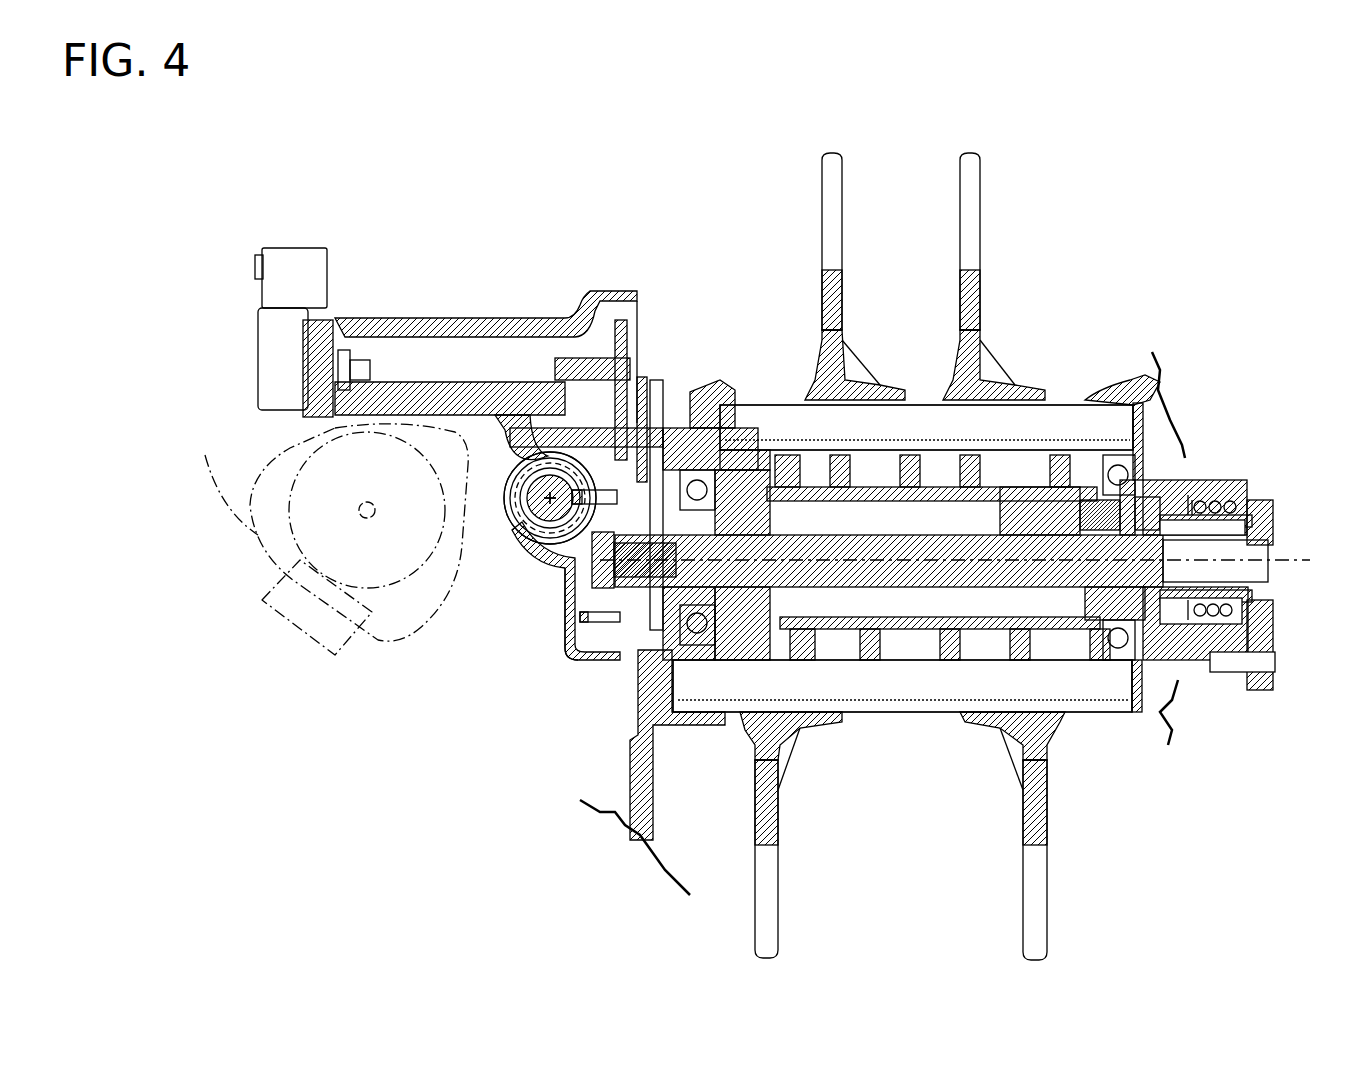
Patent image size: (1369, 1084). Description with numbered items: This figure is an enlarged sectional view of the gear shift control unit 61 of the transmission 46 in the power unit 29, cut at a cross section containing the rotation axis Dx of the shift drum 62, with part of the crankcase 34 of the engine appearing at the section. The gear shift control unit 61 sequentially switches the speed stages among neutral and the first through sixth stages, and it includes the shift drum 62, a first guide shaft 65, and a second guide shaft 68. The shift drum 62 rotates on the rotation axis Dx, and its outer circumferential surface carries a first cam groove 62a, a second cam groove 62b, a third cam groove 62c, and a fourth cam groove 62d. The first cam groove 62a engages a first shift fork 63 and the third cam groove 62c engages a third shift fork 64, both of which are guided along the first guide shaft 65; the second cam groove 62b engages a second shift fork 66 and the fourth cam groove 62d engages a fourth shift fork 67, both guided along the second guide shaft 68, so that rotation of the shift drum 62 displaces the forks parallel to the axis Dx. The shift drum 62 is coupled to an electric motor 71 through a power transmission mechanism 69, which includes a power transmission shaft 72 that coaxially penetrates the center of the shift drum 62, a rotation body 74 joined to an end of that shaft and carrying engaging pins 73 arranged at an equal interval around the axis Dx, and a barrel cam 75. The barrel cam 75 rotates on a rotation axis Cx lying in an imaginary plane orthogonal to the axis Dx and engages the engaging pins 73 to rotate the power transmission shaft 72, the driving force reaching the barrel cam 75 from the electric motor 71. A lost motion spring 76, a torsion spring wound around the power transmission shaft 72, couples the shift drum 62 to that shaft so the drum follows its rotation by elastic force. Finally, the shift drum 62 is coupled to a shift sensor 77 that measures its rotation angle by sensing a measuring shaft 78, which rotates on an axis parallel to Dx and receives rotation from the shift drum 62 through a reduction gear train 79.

The power unit 29 is at (1218, 277).
The crankcase 34 is at (652, 780).
The transmission 46 is at (1110, 238).
The gear shift control unit 61 is at (1068, 322).
The shift drum 62 is at (906, 600).
The first cam groove 62a is at (772, 628).
The second cam groove 62b is at (842, 492).
The third cam groove 62c is at (1022, 657).
The fourth cam groove 62d is at (968, 470).
The first shift fork 63 is at (768, 793).
The third shift fork 64 is at (1036, 797).
The first guide shaft 65 is at (886, 692).
The second shift fork 66 is at (836, 312).
The fourth shift fork 67 is at (976, 312).
The second guide shaft 68 is at (931, 425).
The power transmission mechanism 69 is at (560, 650).
The electric motor 71 is at (258, 475).
The power transmission shaft 72 is at (1050, 540).
The engaging pins 73 is at (540, 480).
The rotation body 74 is at (565, 655).
The barrel cam 75 is at (528, 508).
The lost motion spring 76 is at (1218, 500).
The shift sensor 77 is at (282, 332).
The measuring shaft 78 is at (645, 378).
The reduction gear train 79 is at (668, 390).
The rotation axis Cx is at (550, 498).
The rotation axis Dx is at (1250, 560).